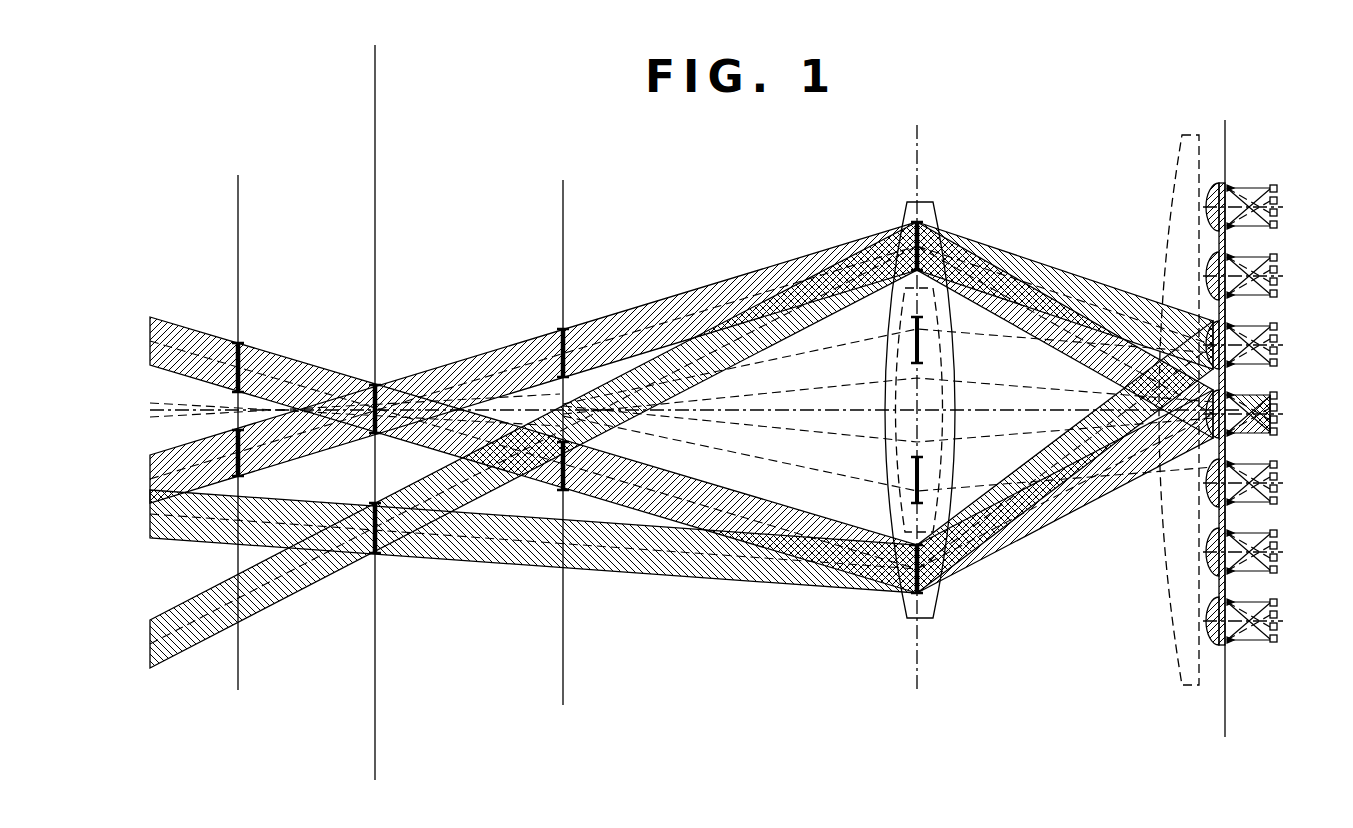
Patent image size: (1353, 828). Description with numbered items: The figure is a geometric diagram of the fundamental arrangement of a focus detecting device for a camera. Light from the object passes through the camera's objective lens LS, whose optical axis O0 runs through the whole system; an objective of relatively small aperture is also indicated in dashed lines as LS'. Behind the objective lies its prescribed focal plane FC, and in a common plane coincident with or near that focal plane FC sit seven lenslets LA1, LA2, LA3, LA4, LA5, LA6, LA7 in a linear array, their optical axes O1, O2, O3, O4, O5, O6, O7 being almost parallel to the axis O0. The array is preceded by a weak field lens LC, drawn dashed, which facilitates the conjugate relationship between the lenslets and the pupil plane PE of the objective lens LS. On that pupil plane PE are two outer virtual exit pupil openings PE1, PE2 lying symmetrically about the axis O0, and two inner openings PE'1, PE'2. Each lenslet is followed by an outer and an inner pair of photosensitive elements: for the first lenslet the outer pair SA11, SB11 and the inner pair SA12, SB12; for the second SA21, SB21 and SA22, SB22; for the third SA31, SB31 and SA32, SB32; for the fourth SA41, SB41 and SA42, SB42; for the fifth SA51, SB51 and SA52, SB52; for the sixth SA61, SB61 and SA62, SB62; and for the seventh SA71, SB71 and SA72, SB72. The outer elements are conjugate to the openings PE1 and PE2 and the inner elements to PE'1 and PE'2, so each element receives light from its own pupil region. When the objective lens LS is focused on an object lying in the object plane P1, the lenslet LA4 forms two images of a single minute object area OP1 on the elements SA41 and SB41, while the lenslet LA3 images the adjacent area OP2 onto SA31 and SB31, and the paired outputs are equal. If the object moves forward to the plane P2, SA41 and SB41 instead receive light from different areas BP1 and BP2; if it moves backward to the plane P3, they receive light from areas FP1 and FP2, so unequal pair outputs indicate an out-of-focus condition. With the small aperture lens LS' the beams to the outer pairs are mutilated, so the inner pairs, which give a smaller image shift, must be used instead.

The object plane P1 is at (375, 715).
The plane P2 is at (562, 650).
The plane P3 is at (238, 652).
The minute object area FP1 is at (240, 360).
The minute object area FP2 is at (233, 462).
The minute object area OP1 is at (372, 395).
The minute object area OP2 is at (370, 540).
The minute object area BP1 is at (570, 465).
The minute object area BP2 is at (560, 350).
The pupil plane PE is at (892, 407).
The virtual exit pupil opening PE1 is at (925, 580).
The virtual exit pupil opening PE2 is at (925, 230).
The virtual exit pupil opening PE'1 is at (963, 477).
The virtual exit pupil opening PE'2 is at (965, 347).
The objective lens LS is at (904, 422).
The relatively small aperture objective lens LS' is at (895, 410).
The optical axis of the objective lens O0 is at (1003, 412).
The field lens LC is at (1180, 663).
The focal plane FC is at (1225, 713).
The lenslet LA1 is at (1208, 207).
The lenslet LA2 is at (1208, 275).
The lenslet LA3 is at (1208, 335).
The lenslet LA4 is at (1205, 425).
The lenslet LA5 is at (1208, 490).
The lenslet LA6 is at (1208, 553).
The lenslet LA7 is at (1208, 616).
The optical axis of lenslet O1 is at (1238, 205).
The optical axis of lenslet O2 is at (1238, 274).
The optical axis of lenslet O3 is at (1238, 343).
The optical axis of lenslet O4 is at (1238, 412).
The optical axis of lenslet O5 is at (1238, 487).
The optical axis of lenslet O6 is at (1238, 556).
The optical axis of lenslet O7 is at (1238, 625).
The photosensitive element SA11 is at (1278, 189).
The photosensitive element SA12 is at (1278, 201).
The photosensitive element SB12 is at (1278, 213).
The photosensitive element SB11 is at (1278, 225).
The photosensitive element SA21 is at (1278, 258).
The photosensitive element SA22 is at (1278, 270).
The photosensitive element SB22 is at (1278, 282).
The photosensitive element SB21 is at (1278, 294).
The photosensitive element SA31 is at (1278, 327).
The photosensitive element SA32 is at (1278, 339).
The photosensitive element SB32 is at (1278, 351).
The photosensitive element SB31 is at (1278, 363).
The photosensitive element SA41 is at (1278, 396).
The photosensitive element SA42 is at (1278, 408).
The photosensitive element SB42 is at (1278, 420).
The photosensitive element SB41 is at (1278, 432).
The photosensitive element SA51 is at (1278, 465).
The photosensitive element SA52 is at (1278, 477).
The photosensitive element SB52 is at (1278, 489).
The photosensitive element SB51 is at (1278, 501).
The photosensitive element SA61 is at (1278, 534).
The photosensitive element SA62 is at (1278, 546).
The photosensitive element SB62 is at (1278, 558).
The photosensitive element SB61 is at (1278, 570).
The photosensitive element SA71 is at (1278, 603).
The photosensitive element SA72 is at (1278, 615).
The photosensitive element SB72 is at (1278, 627).
The photosensitive element SB71 is at (1278, 639).